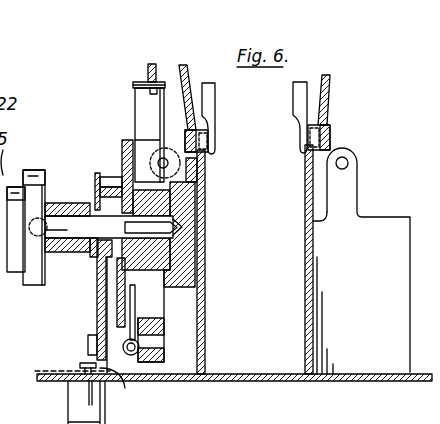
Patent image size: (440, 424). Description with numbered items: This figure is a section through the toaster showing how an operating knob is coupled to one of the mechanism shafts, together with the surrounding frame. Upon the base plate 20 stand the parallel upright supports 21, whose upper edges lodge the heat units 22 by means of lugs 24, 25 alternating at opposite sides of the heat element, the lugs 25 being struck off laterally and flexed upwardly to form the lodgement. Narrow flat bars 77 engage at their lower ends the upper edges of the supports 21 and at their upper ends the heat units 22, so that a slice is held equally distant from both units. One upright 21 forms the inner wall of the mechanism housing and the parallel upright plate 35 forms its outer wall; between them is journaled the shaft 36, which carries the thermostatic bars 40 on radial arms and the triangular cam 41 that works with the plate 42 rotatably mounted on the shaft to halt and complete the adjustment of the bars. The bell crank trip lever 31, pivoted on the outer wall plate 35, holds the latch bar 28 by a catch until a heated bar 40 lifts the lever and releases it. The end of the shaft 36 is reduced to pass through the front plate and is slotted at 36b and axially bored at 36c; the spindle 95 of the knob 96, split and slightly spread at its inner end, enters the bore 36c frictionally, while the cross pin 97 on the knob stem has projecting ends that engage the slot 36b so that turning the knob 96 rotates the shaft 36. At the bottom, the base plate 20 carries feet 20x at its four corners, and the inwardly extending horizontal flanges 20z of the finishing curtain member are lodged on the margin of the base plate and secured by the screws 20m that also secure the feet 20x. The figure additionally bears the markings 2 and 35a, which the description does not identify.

The machine 2 is at (117, 59).
The base plate 20 is at (237, 381).
The screws 20m is at (130, 388).
The feet 20x is at (68, 412).
The inwardly extending horizontal flanges 20z is at (40, 372).
The upright support 21 is at (367, 228).
The heat unit 22 is at (186, 80).
The lug 24 is at (317, 128).
The lug 25 is at (317, 135).
The latch bar 28 is at (208, 157).
The bell crank trip lever 31 is at (157, 64).
The outer wall plate 35 is at (103, 310).
The cavity block 35a is at (97, 250).
The shaft 36 is at (105, 227).
The slot 36b is at (88, 202).
The axial bore 36c is at (153, 237).
The thermostatic bar 40 is at (143, 110).
The polygonal cam 41 is at (127, 138).
The plate 42 is at (117, 319).
The narrow flat bar 77 is at (293, 102).
The spindle 95 is at (60, 255).
The knob 96 is at (28, 170).
The cross pin 97 is at (107, 177).